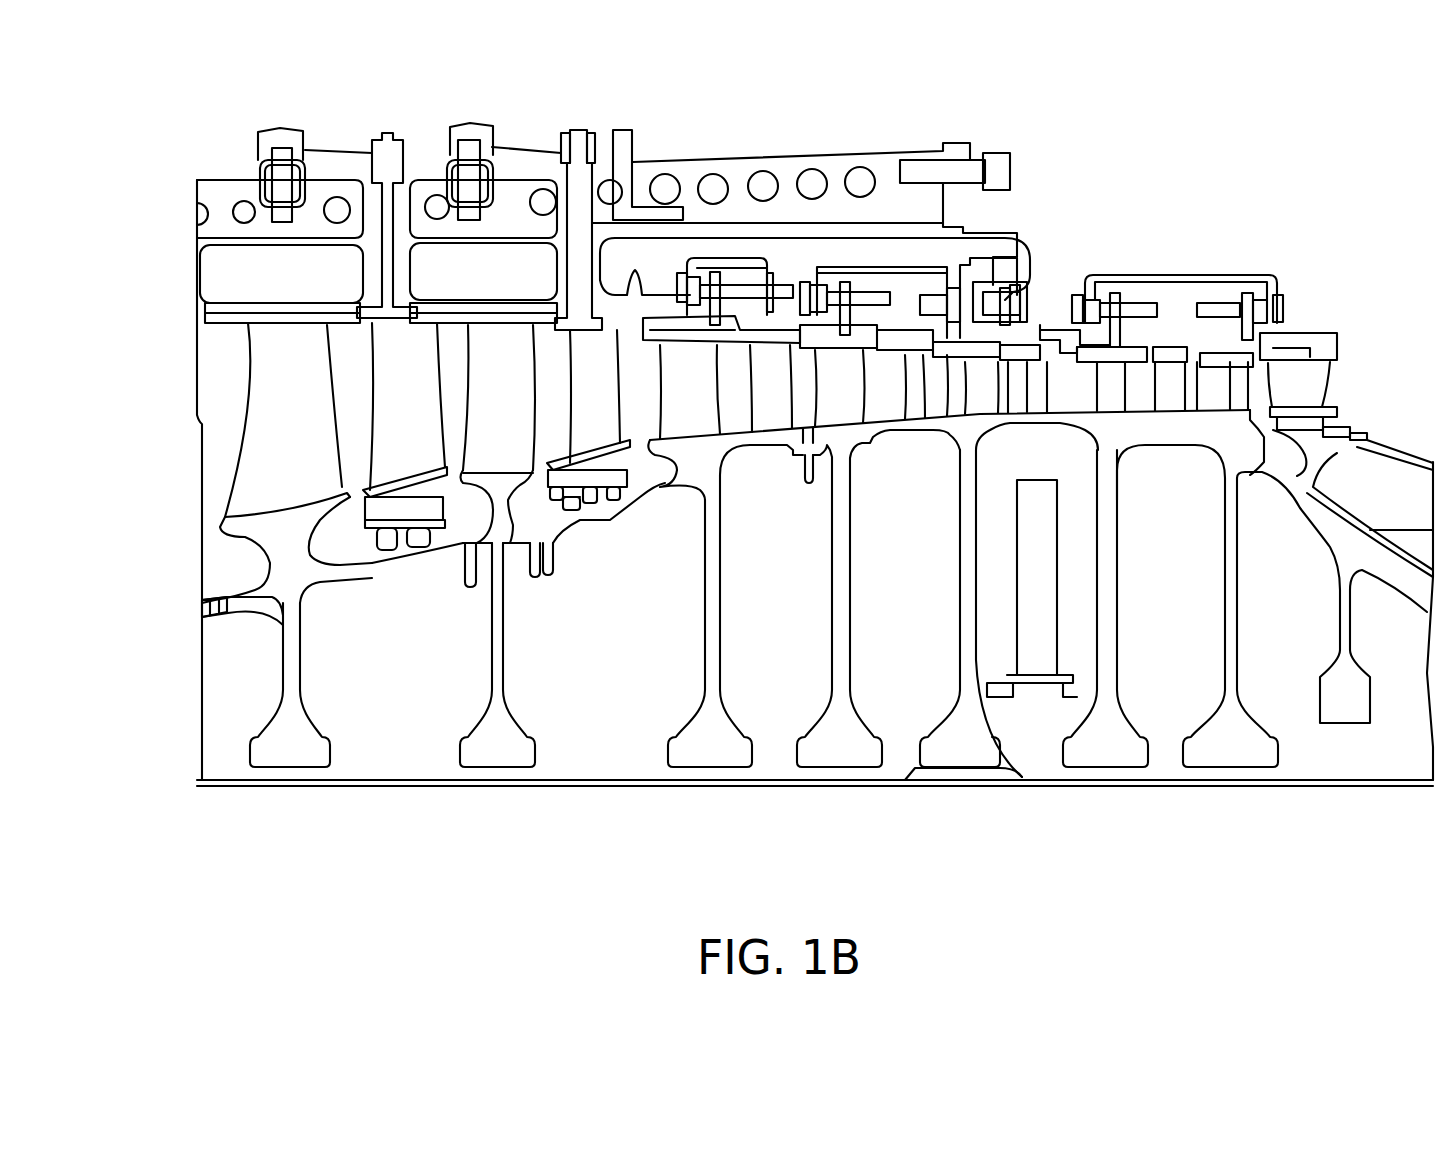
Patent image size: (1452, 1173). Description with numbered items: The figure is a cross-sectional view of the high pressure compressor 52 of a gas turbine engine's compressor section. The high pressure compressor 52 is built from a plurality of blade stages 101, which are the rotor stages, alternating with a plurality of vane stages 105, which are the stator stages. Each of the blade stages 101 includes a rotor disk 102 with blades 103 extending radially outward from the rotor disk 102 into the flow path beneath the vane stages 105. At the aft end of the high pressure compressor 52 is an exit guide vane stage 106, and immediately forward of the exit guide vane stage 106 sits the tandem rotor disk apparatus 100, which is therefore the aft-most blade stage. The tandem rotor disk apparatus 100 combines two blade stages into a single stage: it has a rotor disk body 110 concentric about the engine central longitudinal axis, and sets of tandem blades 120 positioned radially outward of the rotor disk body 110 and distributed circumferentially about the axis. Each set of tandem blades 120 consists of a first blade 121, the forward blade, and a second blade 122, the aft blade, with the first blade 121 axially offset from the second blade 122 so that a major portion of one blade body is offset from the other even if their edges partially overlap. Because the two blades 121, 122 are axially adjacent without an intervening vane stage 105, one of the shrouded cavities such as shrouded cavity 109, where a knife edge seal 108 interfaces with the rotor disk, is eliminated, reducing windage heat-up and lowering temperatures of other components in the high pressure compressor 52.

The high pressure compressor 52 is at (138, 140).
The tandem rotor disk apparatus 100 is at (1231, 810).
The blade stages 101 is at (286, 804).
The rotor disk 102 is at (472, 755).
The blades 103 is at (245, 462).
The vane stages 105 is at (400, 355).
The exit guide vane stage 106 is at (1303, 383).
The knife edge seal 108 is at (547, 547).
The shrouded cavity 109 is at (573, 510).
The rotor disk body 110 is at (1240, 710).
The tandem blades 120 is at (1194, 435).
The first blade 121 is at (1167, 380).
The second blade 122 is at (1228, 383).